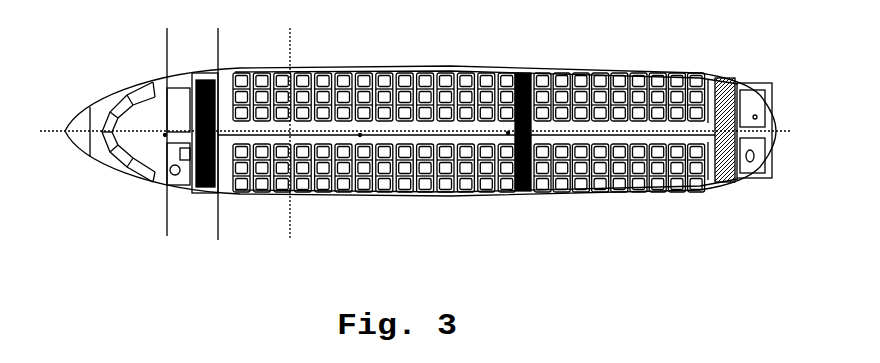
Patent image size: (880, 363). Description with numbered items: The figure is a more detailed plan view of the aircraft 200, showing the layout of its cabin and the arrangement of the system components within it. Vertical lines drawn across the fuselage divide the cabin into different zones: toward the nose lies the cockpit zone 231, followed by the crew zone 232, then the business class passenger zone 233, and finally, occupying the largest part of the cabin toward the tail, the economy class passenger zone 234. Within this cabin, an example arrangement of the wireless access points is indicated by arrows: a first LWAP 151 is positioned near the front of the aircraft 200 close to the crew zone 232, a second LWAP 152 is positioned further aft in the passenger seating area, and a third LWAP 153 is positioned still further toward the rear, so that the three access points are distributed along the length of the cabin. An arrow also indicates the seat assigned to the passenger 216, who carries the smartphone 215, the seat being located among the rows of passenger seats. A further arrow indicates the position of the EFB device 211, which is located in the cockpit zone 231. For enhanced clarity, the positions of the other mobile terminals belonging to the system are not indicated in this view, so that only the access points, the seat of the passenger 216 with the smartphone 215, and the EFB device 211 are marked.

The aircraft 200 is at (538, 65).
The cockpit zone 231 is at (101, 122).
The crew zone 232 is at (157, 125).
The business class passenger zone 233 is at (277, 154).
The economy class passenger zone 234 is at (499, 134).
The EFB device 211 is at (133, 120).
The LWAP 151 is at (165, 135).
The LWAP 152 is at (360, 135).
The LWAP 153 is at (508, 133).
The smartphone 215 is at (280, 212).
The passenger 216 is at (310, 173).